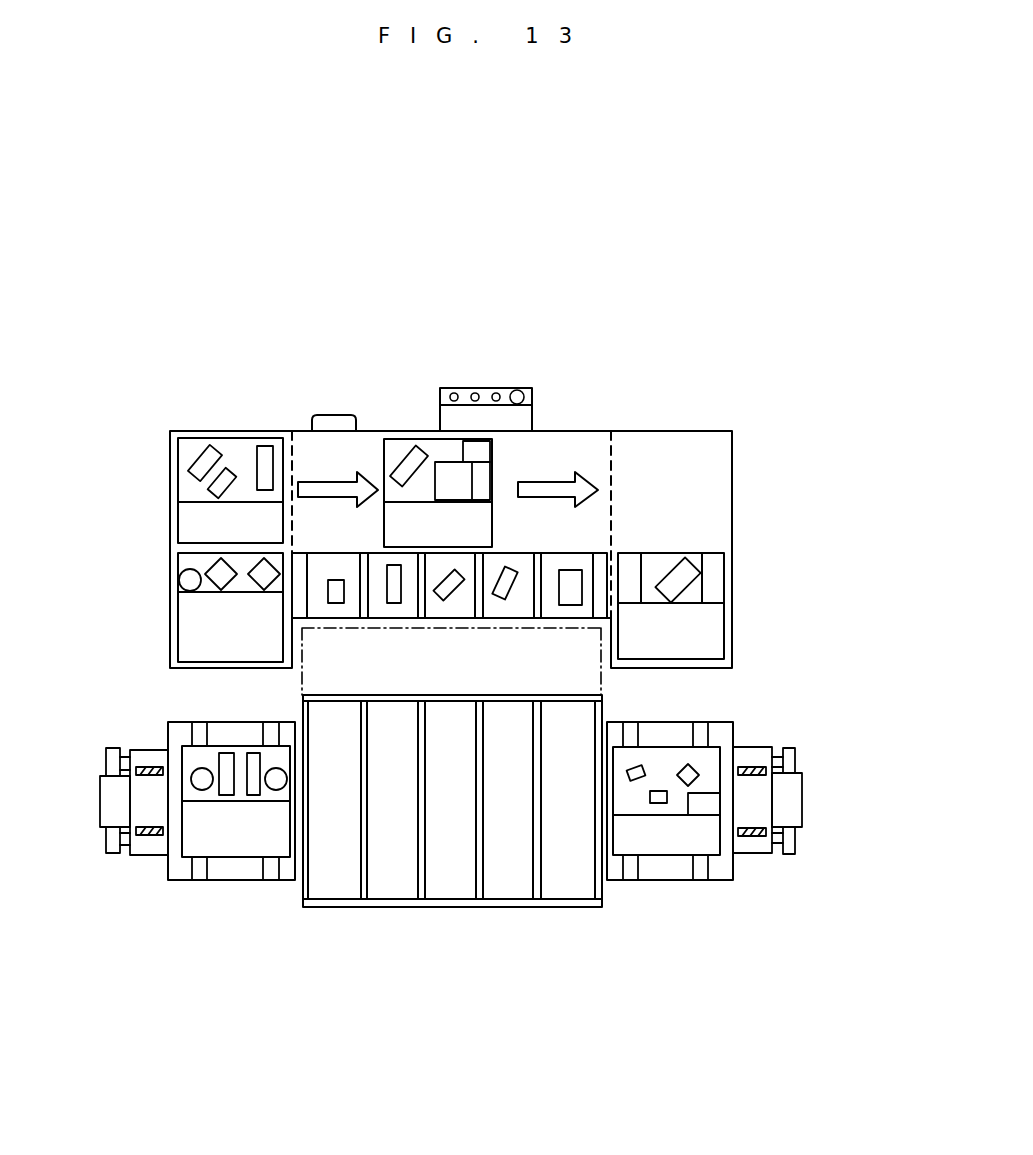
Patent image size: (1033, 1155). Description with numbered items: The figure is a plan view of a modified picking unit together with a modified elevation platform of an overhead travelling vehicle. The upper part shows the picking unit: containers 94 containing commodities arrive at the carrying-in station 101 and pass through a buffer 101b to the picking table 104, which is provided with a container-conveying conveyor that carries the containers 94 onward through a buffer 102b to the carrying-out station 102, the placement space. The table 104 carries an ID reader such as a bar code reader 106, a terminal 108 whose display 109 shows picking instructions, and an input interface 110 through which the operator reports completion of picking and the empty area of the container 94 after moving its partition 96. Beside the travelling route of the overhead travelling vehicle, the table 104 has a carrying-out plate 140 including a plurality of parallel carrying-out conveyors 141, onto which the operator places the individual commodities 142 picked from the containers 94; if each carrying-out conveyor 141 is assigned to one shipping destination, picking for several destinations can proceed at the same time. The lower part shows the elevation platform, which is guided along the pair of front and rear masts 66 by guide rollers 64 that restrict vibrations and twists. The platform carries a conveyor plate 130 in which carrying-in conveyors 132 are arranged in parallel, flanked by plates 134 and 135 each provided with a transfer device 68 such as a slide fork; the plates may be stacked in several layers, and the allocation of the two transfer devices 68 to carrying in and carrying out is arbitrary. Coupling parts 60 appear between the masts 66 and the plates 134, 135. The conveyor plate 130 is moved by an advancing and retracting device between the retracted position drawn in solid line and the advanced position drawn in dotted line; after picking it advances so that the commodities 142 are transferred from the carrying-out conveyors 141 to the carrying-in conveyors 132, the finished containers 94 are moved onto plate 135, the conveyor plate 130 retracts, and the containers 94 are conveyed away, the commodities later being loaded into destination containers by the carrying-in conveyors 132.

The coupling unit 60 is at (148, 767).
The guide rollers 64 is at (112, 759).
The masts 66 is at (108, 800).
The transfer device 68 is at (270, 730).
The container 94 is at (178, 485).
The partition 96 is at (252, 503).
The carrying-in station 101 is at (170, 580).
The buffer 101b is at (228, 431).
The carrying-out station 102 is at (733, 593).
The buffer 102b is at (625, 438).
The picking table 104 is at (568, 438).
The bar code reader 106 is at (333, 420).
The terminal 108 is at (525, 385).
The display 109 is at (480, 415).
The input interface 110 is at (462, 392).
The conveyor plate 130 is at (428, 909).
The carrying-in conveyors 132 is at (392, 883).
The plate 134 is at (232, 870).
The plate 135 is at (675, 872).
The carrying-out plate 140 is at (580, 550).
The carrying-out conveyors 141 is at (342, 613).
The commodities 142 is at (389, 573).